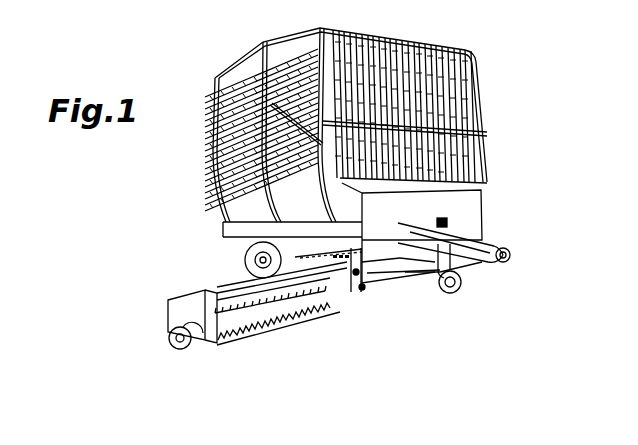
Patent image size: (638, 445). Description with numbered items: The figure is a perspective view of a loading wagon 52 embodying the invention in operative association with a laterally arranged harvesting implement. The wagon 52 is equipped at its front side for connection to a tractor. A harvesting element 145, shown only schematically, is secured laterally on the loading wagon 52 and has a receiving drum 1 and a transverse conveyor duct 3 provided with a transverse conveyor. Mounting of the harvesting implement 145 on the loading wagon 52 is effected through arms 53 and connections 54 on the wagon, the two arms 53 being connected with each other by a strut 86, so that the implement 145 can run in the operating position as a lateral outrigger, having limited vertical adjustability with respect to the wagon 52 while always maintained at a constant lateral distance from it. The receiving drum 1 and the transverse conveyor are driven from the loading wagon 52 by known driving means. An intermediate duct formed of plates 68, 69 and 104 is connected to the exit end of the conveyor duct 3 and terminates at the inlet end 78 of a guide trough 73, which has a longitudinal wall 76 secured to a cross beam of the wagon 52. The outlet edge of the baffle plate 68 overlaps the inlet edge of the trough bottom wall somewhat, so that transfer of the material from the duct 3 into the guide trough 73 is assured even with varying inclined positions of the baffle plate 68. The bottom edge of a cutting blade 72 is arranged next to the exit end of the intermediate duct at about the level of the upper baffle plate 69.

The loading wagon 52 is at (502, 111).
The harvesting element 145 is at (225, 330).
The receiving drum 1 is at (232, 345).
The transverse conveyor duct 3 is at (240, 282).
The plate 69 is at (298, 257).
The baffle plate 68 is at (325, 285).
The cutting blade 72 is at (362, 283).
The plate 104 is at (357, 285).
The inlet end 78 is at (367, 280).
The longitudinal wall 76 is at (388, 262).
The strut 86 is at (403, 268).
The arms 53 is at (412, 273).
The connections 54 is at (445, 275).
The guide trough 73 is at (473, 270).